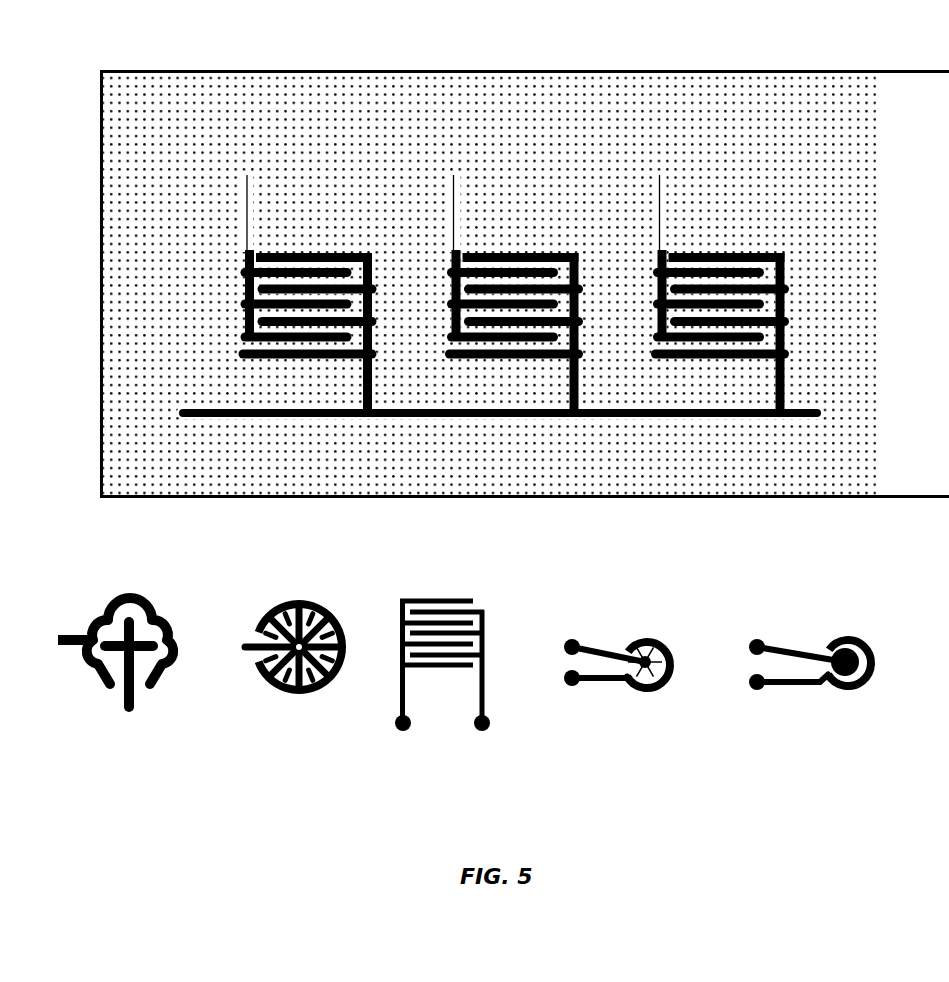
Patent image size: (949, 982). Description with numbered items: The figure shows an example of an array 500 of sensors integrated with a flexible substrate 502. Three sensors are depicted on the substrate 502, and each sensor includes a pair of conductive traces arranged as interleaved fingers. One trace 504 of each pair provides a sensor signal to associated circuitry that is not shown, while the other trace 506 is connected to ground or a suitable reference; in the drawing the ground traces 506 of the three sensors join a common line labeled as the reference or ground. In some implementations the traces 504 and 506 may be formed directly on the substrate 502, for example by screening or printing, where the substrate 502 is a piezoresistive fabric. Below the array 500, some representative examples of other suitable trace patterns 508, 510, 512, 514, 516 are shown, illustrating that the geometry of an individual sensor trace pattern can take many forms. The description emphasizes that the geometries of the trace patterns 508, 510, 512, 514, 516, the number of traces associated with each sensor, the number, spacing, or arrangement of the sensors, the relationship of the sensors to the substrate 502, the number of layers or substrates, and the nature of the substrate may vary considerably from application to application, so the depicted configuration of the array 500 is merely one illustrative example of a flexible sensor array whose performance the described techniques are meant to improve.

The array of sensors 500 is at (76, 44).
The flexible substrate 502 is at (114, 193).
The trace 504 is at (243, 268).
The trace 506 is at (372, 352).
The trace pattern 508 is at (165, 588).
The trace pattern 510 is at (337, 590).
The trace pattern 512 is at (496, 596).
The trace pattern 514 is at (672, 624).
The trace pattern 516 is at (868, 624).